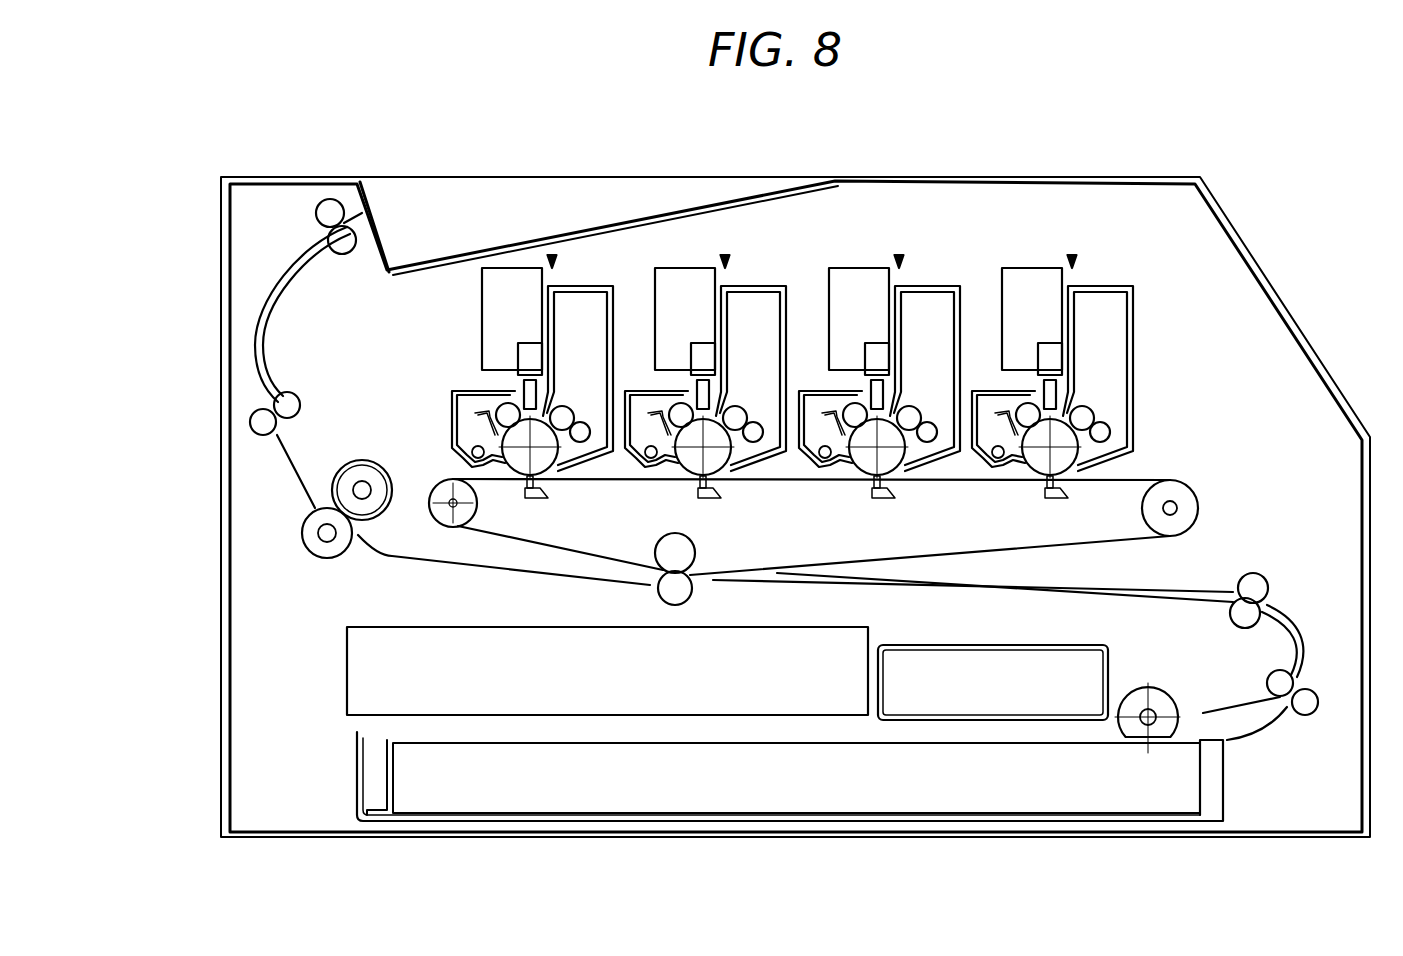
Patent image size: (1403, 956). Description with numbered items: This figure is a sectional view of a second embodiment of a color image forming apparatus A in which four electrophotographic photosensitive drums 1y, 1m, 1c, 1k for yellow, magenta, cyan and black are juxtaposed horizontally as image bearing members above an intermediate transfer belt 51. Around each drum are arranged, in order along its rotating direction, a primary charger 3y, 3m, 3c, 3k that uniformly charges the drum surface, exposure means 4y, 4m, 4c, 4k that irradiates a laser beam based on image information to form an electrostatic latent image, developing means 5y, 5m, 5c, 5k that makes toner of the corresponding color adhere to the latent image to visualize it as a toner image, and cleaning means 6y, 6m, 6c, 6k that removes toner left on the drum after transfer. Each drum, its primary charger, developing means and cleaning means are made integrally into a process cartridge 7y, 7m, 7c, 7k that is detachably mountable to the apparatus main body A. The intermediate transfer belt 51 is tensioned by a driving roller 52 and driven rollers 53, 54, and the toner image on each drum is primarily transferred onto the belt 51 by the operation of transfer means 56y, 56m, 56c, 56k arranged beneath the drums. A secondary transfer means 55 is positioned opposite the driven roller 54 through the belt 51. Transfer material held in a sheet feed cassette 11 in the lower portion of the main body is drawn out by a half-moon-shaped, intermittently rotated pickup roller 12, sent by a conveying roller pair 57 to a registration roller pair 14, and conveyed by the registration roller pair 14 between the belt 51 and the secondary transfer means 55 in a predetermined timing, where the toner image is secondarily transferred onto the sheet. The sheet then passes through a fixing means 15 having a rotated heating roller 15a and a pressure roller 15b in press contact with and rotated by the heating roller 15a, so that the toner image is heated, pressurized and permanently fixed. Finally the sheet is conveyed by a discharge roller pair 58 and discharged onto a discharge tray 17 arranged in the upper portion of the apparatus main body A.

The image forming apparatus A is at (1312, 222).
The photosensitive drum 1k is at (551, 472).
The photosensitive drum 1c is at (710, 472).
The photosensitive drum 1m is at (887, 472).
The photosensitive drum 1y is at (1057, 472).
The primary charger 3k is at (485, 347).
The primary charger 3c is at (658, 347).
The primary charger 3m is at (829, 347).
The primary charger 3y is at (1005, 347).
The exposure means 4k is at (512, 272).
The exposure means 4c is at (685, 272).
The exposure means 4m is at (859, 272).
The exposure means 4y is at (1032, 272).
The developing means 5k is at (582, 301).
The developing means 5c is at (754, 301).
The developing means 5m is at (931, 301).
The developing means 5y is at (1102, 301).
The cleaning means 6k is at (479, 402).
The cleaning means 6c is at (653, 402).
The cleaning means 6m is at (824, 402).
The cleaning means 6y is at (999, 402).
The process cartridge 7k is at (552, 185).
The process cartridge 7c is at (725, 185).
The process cartridge 7m is at (899, 185).
The process cartridge 7y is at (1072, 185).
The sheet feed cassette 11 is at (862, 800).
The pickup roller 12 is at (1157, 703).
The registration roller pair 14 is at (1262, 576).
The fixing means 15 is at (278, 504).
The heating roller 15a is at (355, 462).
The pressure roller 15b is at (311, 550).
The discharge tray 17 is at (443, 255).
The intermediate transfer belt 51 is at (1113, 542).
The driving roller 52 is at (441, 487).
The driven roller 53 is at (1185, 502).
The driven roller 54 is at (690, 570).
The secondary transfer means 55 is at (658, 594).
The transfer means 56k is at (545, 509).
The transfer means 56c is at (673, 494).
The transfer means 56m is at (844, 494).
The transfer means 56y is at (1020, 494).
The conveying roller pair 57 is at (1308, 715).
The discharge roller pair 58 is at (330, 199).